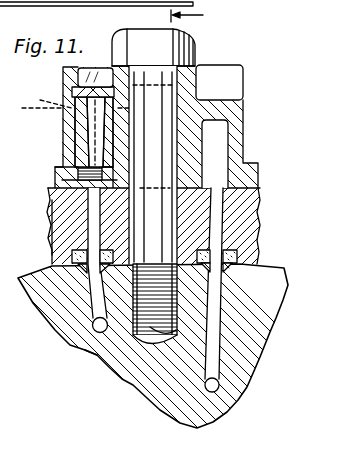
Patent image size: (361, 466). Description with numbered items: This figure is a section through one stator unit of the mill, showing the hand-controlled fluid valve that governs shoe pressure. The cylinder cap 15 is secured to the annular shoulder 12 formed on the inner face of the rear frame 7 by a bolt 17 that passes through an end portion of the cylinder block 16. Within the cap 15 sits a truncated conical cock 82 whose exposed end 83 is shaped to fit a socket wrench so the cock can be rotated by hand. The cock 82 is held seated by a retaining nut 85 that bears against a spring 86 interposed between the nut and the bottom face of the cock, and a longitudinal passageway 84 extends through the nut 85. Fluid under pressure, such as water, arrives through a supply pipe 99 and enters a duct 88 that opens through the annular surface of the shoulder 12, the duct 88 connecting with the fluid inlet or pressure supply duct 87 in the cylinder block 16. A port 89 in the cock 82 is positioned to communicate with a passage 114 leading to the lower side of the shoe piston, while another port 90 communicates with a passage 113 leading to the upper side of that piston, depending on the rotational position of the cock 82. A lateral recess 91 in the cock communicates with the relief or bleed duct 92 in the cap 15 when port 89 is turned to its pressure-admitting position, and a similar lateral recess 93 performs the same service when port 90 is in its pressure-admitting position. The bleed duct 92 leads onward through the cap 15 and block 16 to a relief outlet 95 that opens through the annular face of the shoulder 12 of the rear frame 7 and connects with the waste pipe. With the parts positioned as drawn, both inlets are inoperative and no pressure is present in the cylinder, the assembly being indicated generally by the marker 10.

The rear frame 7 is at (95, 349).
The tool holder assembly 10 is at (196, 16).
The annular shoulder 12 is at (30, 277).
The cylinder cap 15 is at (262, 108).
The cylinder block 16 is at (258, 217).
The bolt 17 is at (157, 340).
The truncated conical cock 82 is at (77, 128).
The exposed end 83 is at (80, 77).
The longitudinal passageway 84 is at (90, 143).
The retaining nut 85 is at (62, 185).
The spring 86 is at (72, 173).
The fluid inlet or pressure supply duct 87 is at (75, 212).
The duct 88 is at (103, 289).
The port 89 is at (101, 165).
The port 90 is at (73, 95).
The lateral recess 91 is at (88, 133).
The relief or bleed duct 92 is at (198, 67).
The lateral recess 93 is at (131, 110).
The relief outlet 95 is at (215, 364).
The supply pipe 99 is at (218, 145).
The passage 113 is at (43, 100).
The passage 114 is at (95, 153).